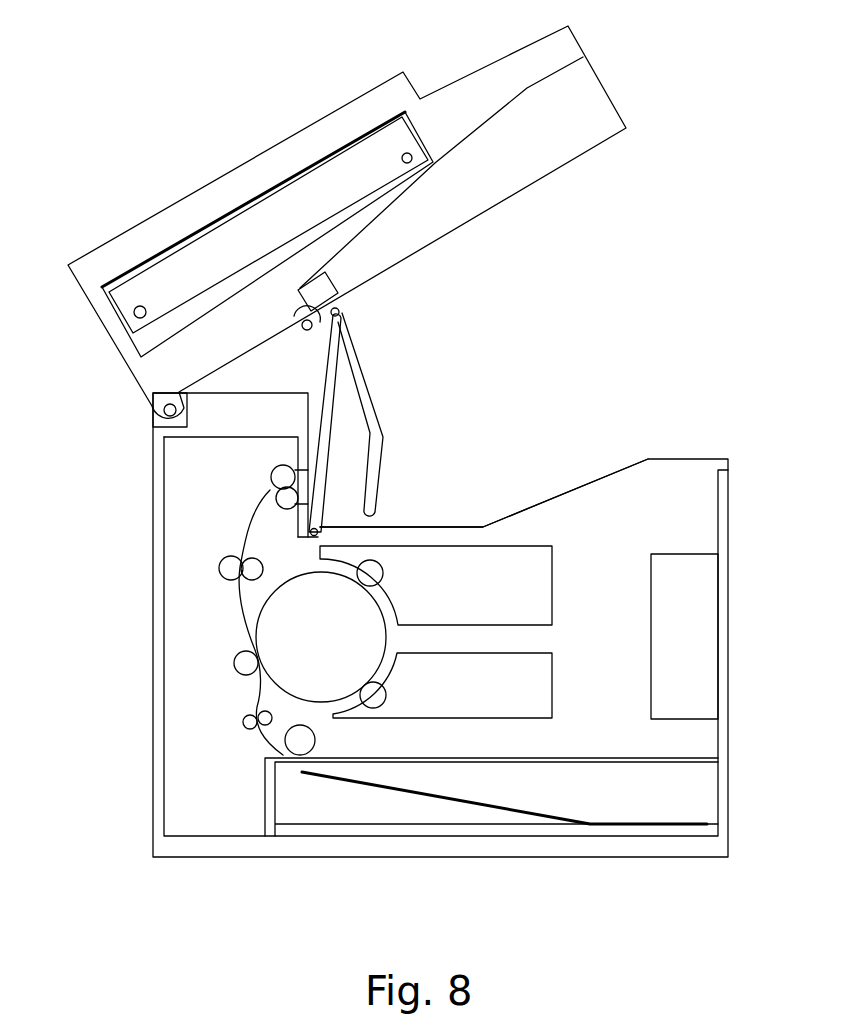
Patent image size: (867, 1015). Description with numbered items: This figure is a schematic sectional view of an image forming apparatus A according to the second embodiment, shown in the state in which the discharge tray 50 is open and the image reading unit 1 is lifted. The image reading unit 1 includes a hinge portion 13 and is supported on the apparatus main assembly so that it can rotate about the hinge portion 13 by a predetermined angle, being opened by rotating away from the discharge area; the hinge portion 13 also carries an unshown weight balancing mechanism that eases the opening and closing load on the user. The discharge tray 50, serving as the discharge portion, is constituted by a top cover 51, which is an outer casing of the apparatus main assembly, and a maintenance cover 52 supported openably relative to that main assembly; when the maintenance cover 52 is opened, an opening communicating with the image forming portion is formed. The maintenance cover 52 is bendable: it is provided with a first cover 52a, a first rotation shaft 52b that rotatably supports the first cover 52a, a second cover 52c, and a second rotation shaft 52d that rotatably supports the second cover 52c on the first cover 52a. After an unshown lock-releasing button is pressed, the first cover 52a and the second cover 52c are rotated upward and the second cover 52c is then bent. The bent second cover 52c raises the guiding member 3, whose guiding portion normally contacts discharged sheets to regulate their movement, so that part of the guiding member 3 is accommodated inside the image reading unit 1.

The image reading unit 1 is at (608, 91).
The guiding member 3 is at (333, 310).
The hinge portion 13 is at (167, 421).
The discharge tray 50 is at (573, 449).
The top cover 51 is at (458, 525).
The maintenance cover 52 is at (455, 400).
The first cover 52a is at (327, 388).
The first rotation shaft 52b is at (330, 487).
The second cover 52c is at (372, 417).
The second rotation shaft 52d is at (345, 318).
The image forming apparatus A is at (717, 273).